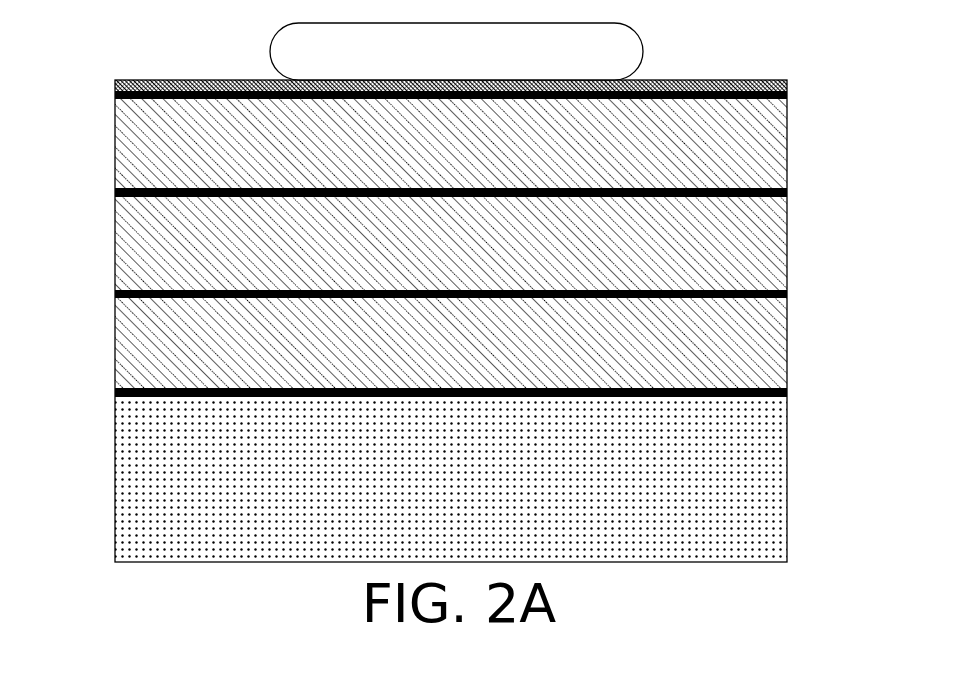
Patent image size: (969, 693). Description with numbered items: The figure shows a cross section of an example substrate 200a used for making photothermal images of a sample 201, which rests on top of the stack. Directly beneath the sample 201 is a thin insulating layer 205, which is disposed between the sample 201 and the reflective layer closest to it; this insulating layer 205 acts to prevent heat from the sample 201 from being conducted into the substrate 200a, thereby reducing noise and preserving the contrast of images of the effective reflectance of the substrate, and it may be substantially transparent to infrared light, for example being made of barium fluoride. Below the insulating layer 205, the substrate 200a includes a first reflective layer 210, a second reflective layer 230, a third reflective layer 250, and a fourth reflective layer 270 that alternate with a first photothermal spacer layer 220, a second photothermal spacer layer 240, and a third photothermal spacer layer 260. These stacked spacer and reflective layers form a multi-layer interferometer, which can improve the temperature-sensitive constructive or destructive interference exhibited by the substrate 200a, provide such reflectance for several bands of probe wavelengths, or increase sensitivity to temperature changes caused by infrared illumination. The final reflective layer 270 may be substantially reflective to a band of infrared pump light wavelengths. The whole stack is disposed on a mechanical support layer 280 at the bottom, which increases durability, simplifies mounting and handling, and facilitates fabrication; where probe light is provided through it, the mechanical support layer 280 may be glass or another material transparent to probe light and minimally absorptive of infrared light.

The substrate 200a is at (82, 94).
The sample 201 is at (441, 61).
The insulating layer 205 is at (787, 84).
The first reflective layer 210 is at (787, 96).
The first photothermal spacer layer 220 is at (441, 150).
The second reflective layer 230 is at (787, 192).
The second photothermal spacer layer 240 is at (441, 250).
The third reflective layer 250 is at (787, 294).
The third photothermal spacer layer 260 is at (441, 350).
The fourth reflective layer 270 is at (787, 392).
The mechanical support layer 280 is at (441, 490).